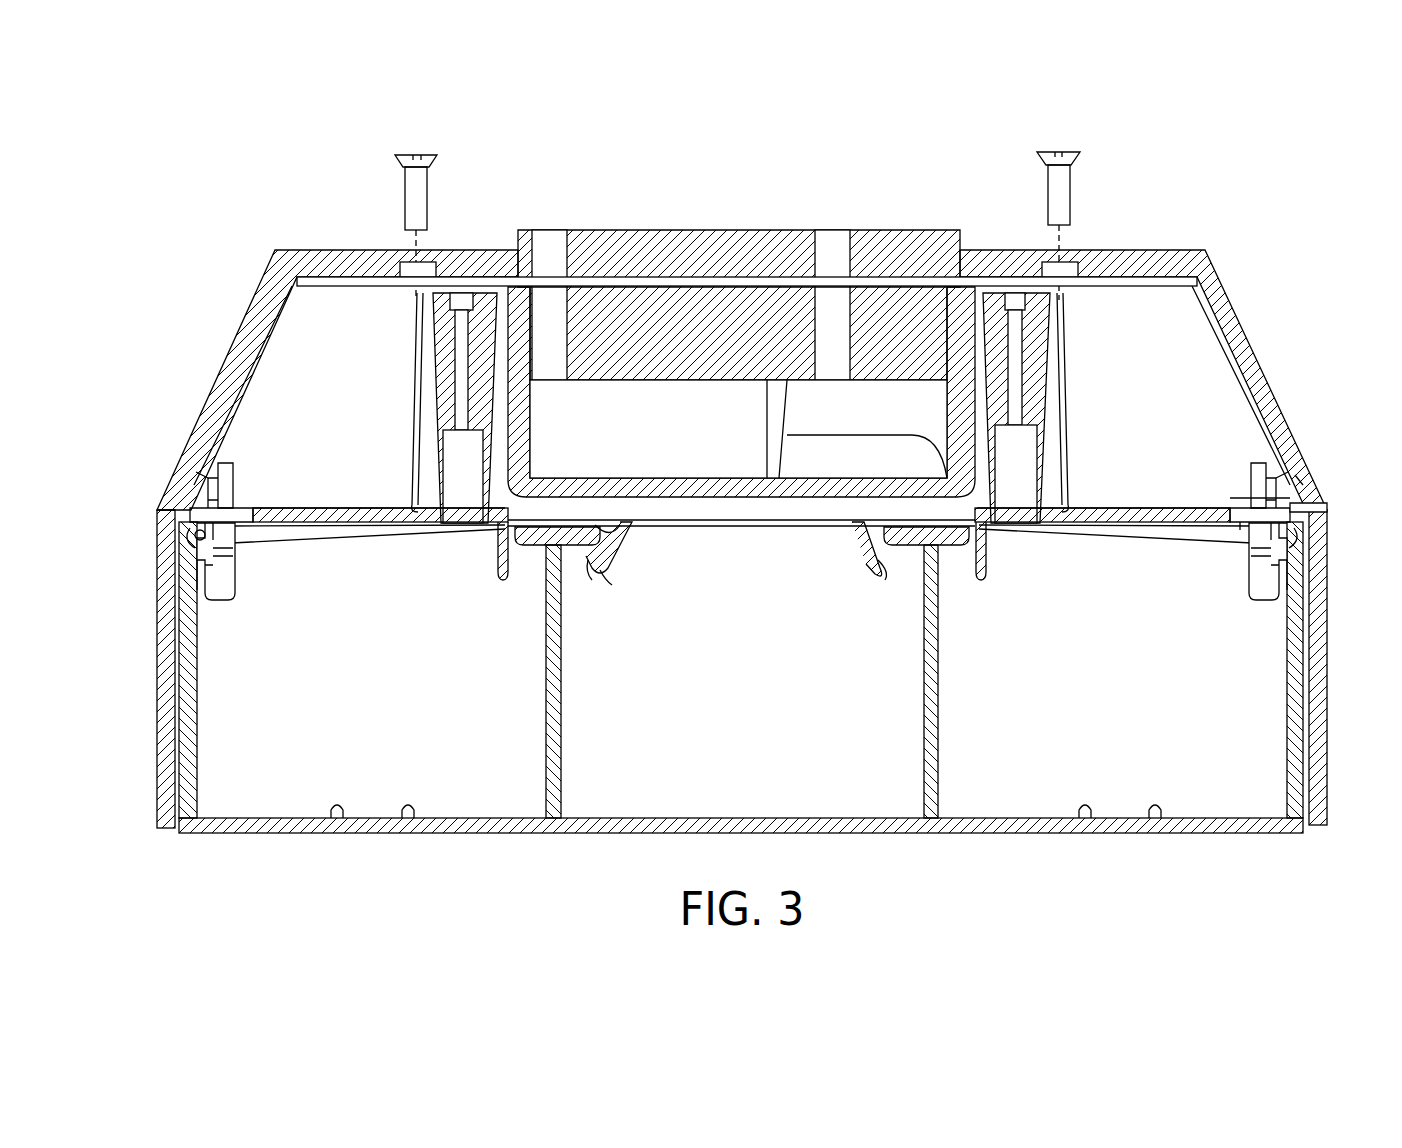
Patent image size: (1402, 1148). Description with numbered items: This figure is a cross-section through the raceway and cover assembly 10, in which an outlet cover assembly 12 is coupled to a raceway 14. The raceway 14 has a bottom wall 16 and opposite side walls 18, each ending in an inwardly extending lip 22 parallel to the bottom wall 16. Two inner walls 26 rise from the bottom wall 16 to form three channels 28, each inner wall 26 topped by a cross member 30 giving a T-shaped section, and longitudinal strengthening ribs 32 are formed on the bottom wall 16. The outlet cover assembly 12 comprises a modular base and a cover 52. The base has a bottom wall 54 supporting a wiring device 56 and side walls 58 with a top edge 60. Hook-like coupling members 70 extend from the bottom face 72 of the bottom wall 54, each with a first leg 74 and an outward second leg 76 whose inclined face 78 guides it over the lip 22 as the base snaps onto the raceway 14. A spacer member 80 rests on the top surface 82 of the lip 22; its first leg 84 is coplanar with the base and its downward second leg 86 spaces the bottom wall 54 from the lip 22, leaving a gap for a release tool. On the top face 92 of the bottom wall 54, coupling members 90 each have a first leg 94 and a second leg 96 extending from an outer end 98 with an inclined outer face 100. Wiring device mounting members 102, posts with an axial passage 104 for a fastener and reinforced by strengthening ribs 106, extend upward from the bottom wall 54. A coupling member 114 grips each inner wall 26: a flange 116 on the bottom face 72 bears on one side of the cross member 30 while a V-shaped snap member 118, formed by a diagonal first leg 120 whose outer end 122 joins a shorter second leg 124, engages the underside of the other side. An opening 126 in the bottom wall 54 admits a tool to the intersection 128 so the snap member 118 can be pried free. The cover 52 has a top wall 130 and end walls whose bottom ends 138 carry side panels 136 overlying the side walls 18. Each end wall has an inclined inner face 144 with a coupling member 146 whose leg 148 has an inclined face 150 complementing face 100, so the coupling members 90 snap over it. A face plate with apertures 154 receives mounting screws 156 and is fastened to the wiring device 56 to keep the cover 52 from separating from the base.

The raceway and cover assembly 10 is at (683, 162).
The outlet cover assembly 12 is at (730, 501).
The raceway 14 is at (741, 716).
The bottom wall 16 is at (776, 818).
The side walls 18 is at (198, 725).
The lip 22 is at (236, 546).
The inner wall 26 is at (562, 703).
The channels 28 is at (306, 790).
The cross member 30 is at (588, 548).
The longitudinal strengthening ribs 32 is at (406, 805).
The cover 52 is at (742, 342).
The bottom wall 54 is at (1114, 524).
The wiring device 56 is at (928, 228).
The side walls 58 is at (326, 292).
The top edge 60 is at (302, 265).
The coupling member 70 is at (753, 536).
The bottom face 72 is at (396, 533).
The first leg 74 is at (236, 552).
The second leg 76 is at (207, 572).
The inclined face 78 is at (213, 572).
The spacer member 80 is at (1302, 510).
The top surface 82 is at (193, 528).
The first leg 84 is at (203, 520).
The second leg 86 is at (190, 530).
The coupling members 90 is at (735, 404).
The top face 92 is at (356, 510).
The first leg 94 is at (235, 500).
The second leg 96 is at (195, 470).
The outer end 98 is at (236, 478).
The inclined outer face 100 is at (236, 452).
The wiring device mounting members 102 is at (741, 359).
The axial passage 104 is at (466, 292).
The strengthening ribs 106 is at (412, 362).
The coupling member 114 is at (737, 588).
The flange 116 is at (497, 550).
The V-shaped snap member 118 is at (751, 579).
The first leg 120 is at (626, 560).
The outer end 122 is at (610, 582).
The second leg 124 is at (590, 577).
The opening 126 is at (598, 520).
The intersection 128 is at (620, 520).
The top wall 130 is at (1123, 252).
The side panel 136 is at (157, 528).
The bottom end 138 is at (158, 507).
The inner face 144 is at (1222, 342).
The coupling member 146 is at (1295, 480).
The leg 148 is at (1250, 498).
The inclined face 150 is at (1255, 530).
The apertures 154 is at (408, 258).
The mounting screw 156 is at (430, 185).